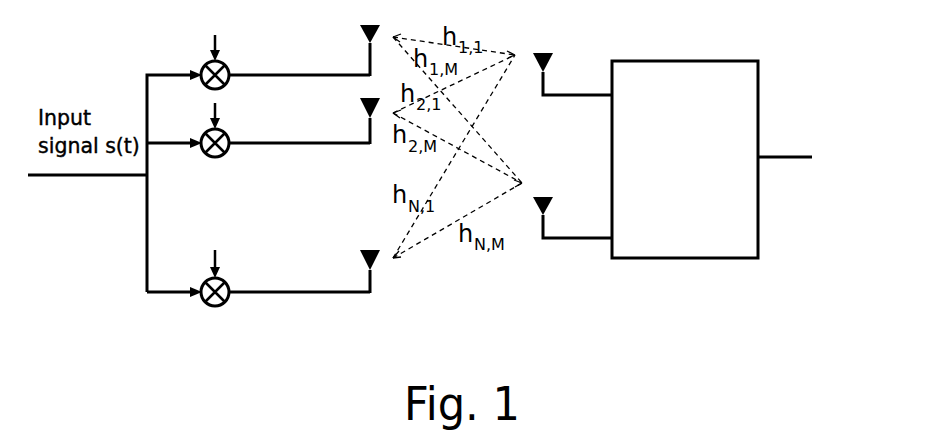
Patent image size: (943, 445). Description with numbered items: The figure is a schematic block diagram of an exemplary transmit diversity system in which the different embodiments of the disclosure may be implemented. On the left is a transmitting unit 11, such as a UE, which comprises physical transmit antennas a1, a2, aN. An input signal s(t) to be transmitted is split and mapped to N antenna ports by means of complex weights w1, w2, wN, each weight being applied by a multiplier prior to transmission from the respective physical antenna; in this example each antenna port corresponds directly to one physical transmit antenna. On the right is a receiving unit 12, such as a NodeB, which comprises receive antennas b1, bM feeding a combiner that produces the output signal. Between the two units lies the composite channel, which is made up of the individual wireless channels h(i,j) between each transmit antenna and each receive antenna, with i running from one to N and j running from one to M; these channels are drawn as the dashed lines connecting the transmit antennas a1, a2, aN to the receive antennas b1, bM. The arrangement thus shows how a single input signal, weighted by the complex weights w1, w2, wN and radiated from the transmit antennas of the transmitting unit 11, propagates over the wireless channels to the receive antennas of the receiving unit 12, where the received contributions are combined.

The transmitting unit 11 is at (258, 201).
The receiving unit 12 is at (657, 273).
The complex weight w1 is at (229, 46).
The complex weight w2 is at (229, 114).
The complex weight wN is at (230, 259).
The physical transmit antenna a1 is at (376, 38).
The physical transmit antenna a2 is at (376, 107).
The physical transmit antenna aN is at (376, 257).
The receive antenna b1 is at (572, 60).
The receive antenna bM is at (572, 206).